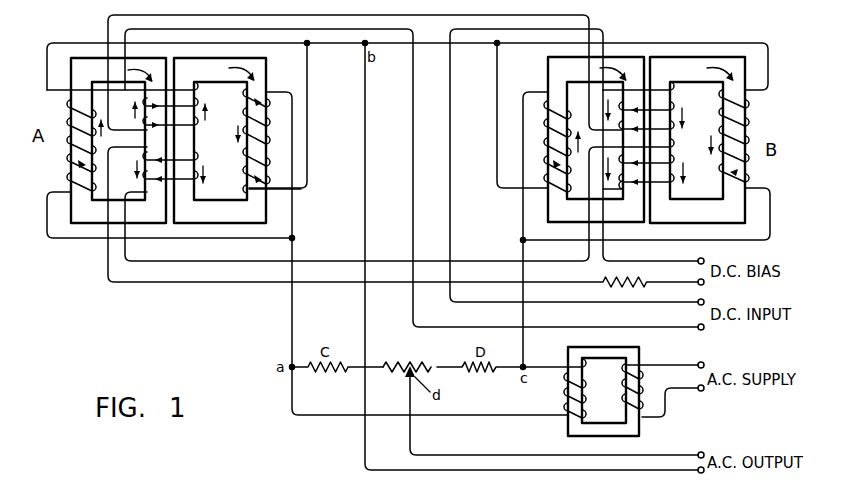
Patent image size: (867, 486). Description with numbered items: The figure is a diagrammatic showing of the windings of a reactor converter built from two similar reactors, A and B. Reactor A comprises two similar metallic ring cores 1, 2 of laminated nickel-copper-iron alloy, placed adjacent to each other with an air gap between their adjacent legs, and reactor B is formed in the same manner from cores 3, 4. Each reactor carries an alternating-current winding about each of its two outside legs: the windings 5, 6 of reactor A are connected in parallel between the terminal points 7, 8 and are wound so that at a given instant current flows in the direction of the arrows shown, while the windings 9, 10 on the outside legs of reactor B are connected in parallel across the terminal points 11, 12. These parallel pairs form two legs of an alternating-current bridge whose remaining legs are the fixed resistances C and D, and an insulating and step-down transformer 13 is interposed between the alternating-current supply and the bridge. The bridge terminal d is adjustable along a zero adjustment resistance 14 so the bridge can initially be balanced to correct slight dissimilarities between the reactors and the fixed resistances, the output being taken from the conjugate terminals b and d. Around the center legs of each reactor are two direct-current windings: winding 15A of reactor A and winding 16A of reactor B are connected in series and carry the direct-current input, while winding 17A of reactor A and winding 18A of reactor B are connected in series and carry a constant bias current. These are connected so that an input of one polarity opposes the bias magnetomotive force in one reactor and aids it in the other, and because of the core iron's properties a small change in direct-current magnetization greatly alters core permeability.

The core 1 is at (71, 219).
The core 2 is at (267, 70).
The core 3 is at (548, 68).
The core 4 is at (744, 215).
The winding 5 is at (74, 163).
The winding 6 is at (245, 115).
The terminal point 7 is at (177, 221).
The terminal point 8 is at (289, 115).
The winding 9 is at (545, 123).
The winding 10 is at (752, 101).
The terminal point 11 is at (638, 219).
The terminal point 12 is at (510, 115).
The insulating and step-down transformer 13 is at (603, 391).
The zero adjustment resistance 14 is at (540, 399).
The D.-C. winding 15A is at (248, 98).
The D.-C. winding 16A is at (675, 93).
The D.-C. bias winding 17A is at (198, 150).
The D.-C. bias winding 18A is at (676, 151).